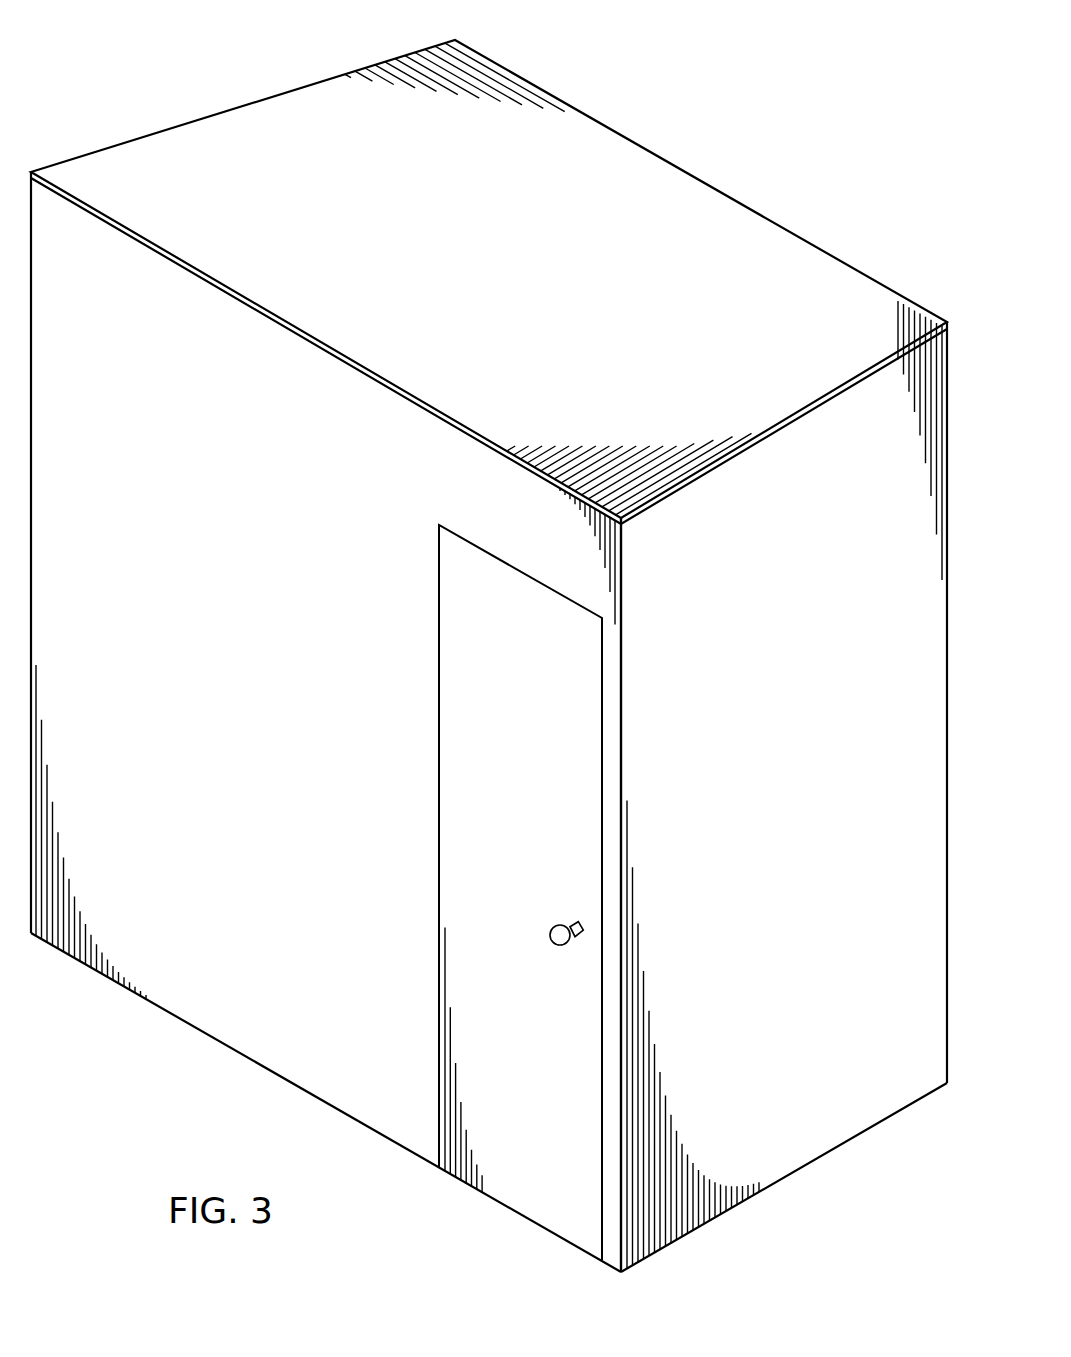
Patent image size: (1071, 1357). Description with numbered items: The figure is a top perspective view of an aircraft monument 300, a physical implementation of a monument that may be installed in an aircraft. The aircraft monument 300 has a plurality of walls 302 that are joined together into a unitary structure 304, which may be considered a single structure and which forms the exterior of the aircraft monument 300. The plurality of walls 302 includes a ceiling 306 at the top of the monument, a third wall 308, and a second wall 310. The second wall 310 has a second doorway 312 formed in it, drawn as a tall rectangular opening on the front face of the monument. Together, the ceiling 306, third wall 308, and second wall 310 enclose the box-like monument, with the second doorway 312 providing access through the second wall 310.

The aircraft monument 300 is at (190, 65).
The plurality of walls 302 is at (313, 1055).
The unitary structure 304 is at (812, 1165).
The ceiling 306 is at (663, 182).
The third wall 308 is at (852, 1112).
The second wall 310 is at (377, 1113).
The second doorway 312 is at (438, 847).